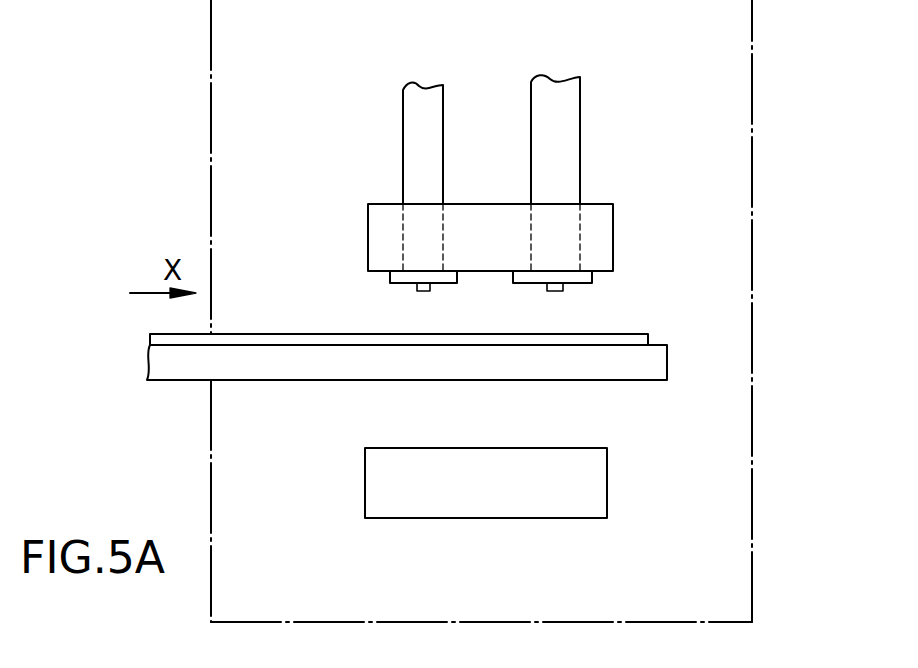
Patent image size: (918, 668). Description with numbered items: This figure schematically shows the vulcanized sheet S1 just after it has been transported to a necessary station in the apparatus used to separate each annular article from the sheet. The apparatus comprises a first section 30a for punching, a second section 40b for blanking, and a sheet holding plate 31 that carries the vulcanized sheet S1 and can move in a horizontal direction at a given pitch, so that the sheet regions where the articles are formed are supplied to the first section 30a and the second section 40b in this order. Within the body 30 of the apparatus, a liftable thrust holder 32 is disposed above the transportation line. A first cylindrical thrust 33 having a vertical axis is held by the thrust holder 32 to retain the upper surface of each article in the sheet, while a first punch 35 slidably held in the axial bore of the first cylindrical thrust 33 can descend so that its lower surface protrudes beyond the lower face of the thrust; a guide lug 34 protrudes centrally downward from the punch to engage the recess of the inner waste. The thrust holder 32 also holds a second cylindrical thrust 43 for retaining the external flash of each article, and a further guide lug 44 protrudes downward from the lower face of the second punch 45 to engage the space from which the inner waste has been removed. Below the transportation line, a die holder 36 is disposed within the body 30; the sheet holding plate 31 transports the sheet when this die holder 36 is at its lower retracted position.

The apparatus body 30 is at (754, 317).
The first section for punching 30a is at (392, 410).
The sheet holding plate 31 is at (653, 365).
The thrust holder 32 is at (605, 237).
The first cylindrical thrust 33 is at (400, 279).
The guide lug 34 is at (428, 292).
The first punch 35 is at (420, 135).
The die holder 36 is at (515, 495).
The second section for blanking 40b is at (608, 401).
The second cylindrical thrust 43 is at (592, 278).
The further guide lug 44 is at (558, 292).
The second punch 45 is at (555, 147).
The vulcanized sheet S1 is at (273, 341).